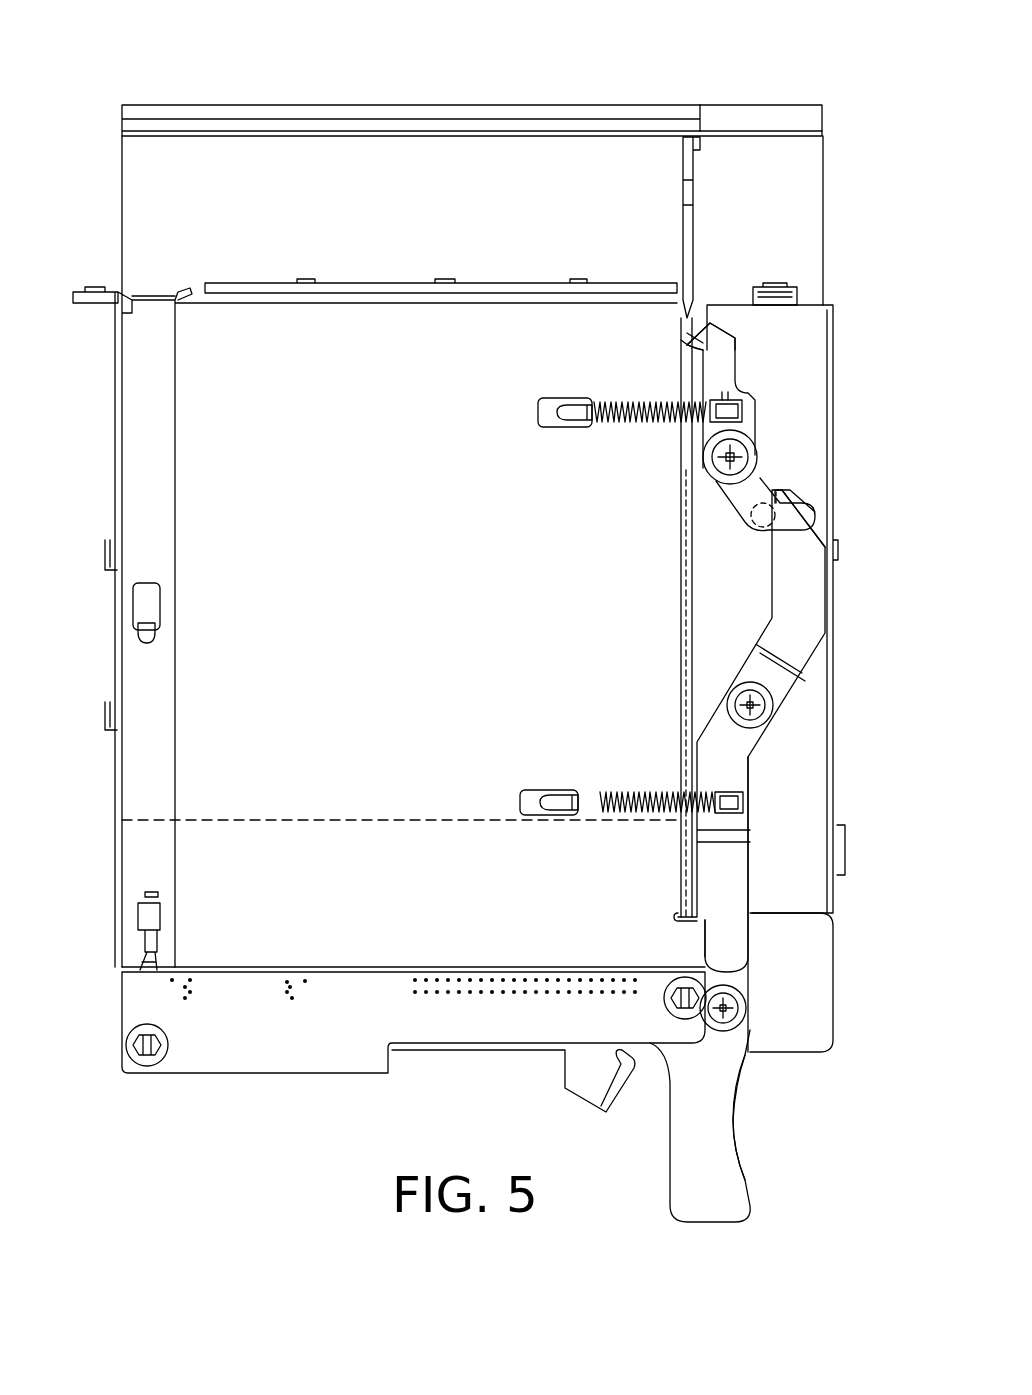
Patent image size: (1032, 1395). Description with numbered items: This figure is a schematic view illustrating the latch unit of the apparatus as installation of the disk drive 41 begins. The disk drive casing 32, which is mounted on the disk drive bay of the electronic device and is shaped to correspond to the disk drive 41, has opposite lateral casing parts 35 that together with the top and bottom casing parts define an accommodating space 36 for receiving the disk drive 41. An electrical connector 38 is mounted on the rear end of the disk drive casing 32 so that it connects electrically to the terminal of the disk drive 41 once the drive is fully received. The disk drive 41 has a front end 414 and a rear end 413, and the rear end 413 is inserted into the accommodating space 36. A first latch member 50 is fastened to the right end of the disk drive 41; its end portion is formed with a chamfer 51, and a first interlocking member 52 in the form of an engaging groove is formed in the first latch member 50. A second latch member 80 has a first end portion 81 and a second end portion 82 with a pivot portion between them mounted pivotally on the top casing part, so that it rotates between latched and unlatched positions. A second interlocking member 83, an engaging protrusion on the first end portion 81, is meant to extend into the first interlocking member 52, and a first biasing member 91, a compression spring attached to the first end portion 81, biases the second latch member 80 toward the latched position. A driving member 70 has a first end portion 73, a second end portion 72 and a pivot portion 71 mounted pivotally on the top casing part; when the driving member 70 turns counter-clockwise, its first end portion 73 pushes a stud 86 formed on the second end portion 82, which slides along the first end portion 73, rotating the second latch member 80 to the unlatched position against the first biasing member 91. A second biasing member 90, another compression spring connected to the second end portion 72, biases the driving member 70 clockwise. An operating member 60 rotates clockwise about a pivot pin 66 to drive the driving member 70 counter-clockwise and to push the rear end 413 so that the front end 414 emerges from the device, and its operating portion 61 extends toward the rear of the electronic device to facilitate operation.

The disk drive casing 32 is at (113, 377).
The lateral casing part 35 is at (830, 350).
The accommodating space 36 is at (190, 917).
The electrical connector 38 is at (280, 1065).
The disk drive 41 is at (233, 102).
The rear end 413 is at (205, 822).
The front end 414 is at (528, 100).
The first latch member 50 is at (697, 227).
The chamfer 51 is at (697, 303).
The first interlocking member 52 is at (692, 193).
The operating member 60 is at (733, 1150).
The operating portion 61 is at (720, 1112).
The pivot pin 66 is at (740, 1008).
The driving member 70 is at (792, 690).
The pivot portion 71 is at (772, 718).
The second end portion 72 is at (738, 954).
The first end portion 73 is at (812, 550).
The second latch member 80 is at (748, 365).
The first end portion 81 is at (713, 335).
The second end portion 82 is at (790, 512).
The second interlocking member 83 is at (690, 342).
The stud 86 is at (762, 490).
The second biasing member 90 is at (612, 792).
The first biasing member 91 is at (623, 398).